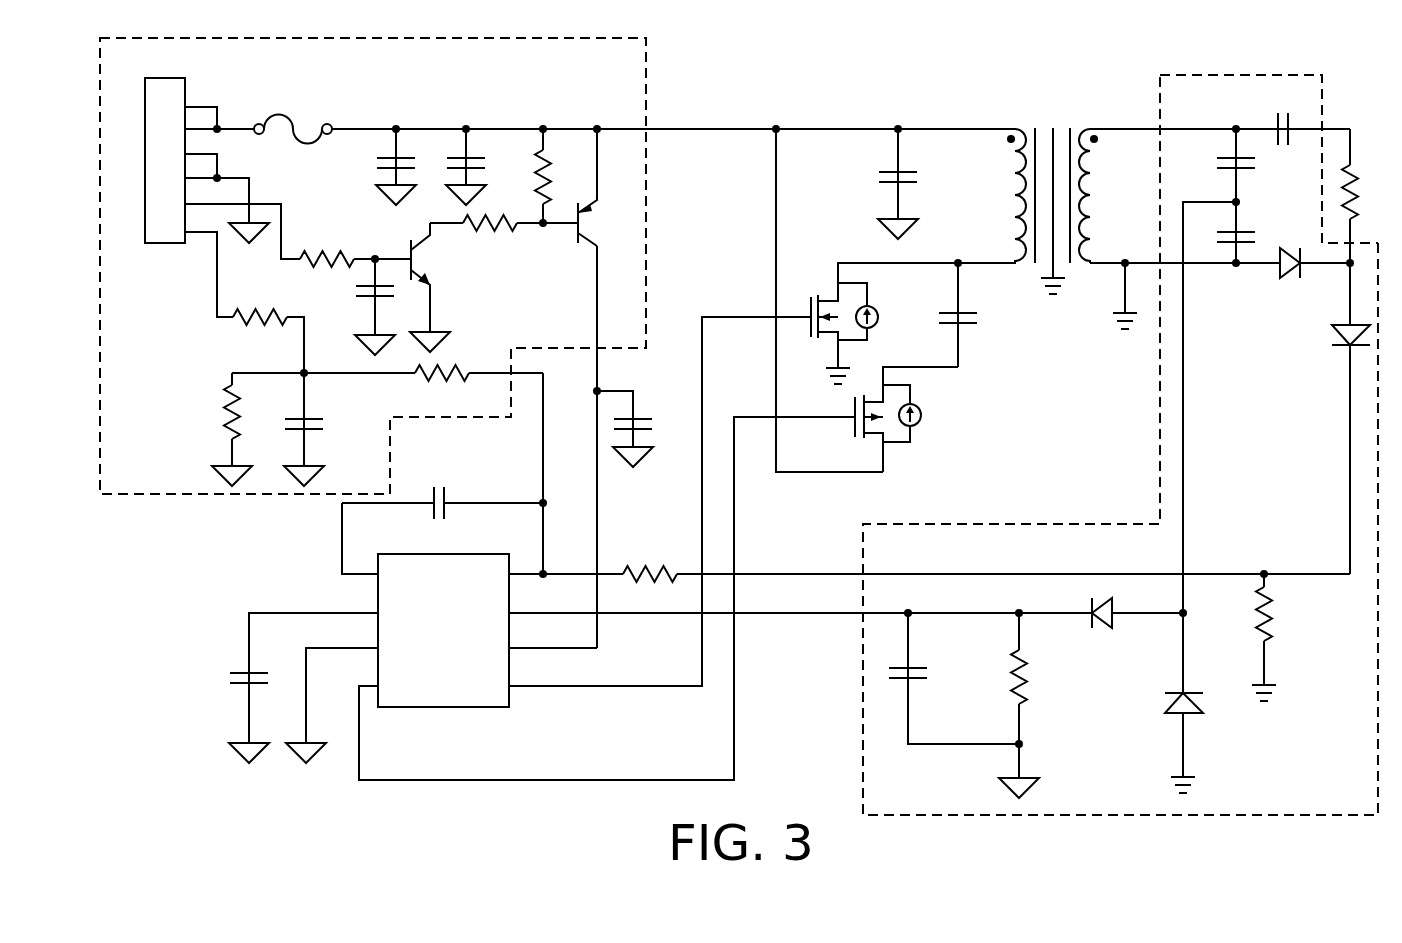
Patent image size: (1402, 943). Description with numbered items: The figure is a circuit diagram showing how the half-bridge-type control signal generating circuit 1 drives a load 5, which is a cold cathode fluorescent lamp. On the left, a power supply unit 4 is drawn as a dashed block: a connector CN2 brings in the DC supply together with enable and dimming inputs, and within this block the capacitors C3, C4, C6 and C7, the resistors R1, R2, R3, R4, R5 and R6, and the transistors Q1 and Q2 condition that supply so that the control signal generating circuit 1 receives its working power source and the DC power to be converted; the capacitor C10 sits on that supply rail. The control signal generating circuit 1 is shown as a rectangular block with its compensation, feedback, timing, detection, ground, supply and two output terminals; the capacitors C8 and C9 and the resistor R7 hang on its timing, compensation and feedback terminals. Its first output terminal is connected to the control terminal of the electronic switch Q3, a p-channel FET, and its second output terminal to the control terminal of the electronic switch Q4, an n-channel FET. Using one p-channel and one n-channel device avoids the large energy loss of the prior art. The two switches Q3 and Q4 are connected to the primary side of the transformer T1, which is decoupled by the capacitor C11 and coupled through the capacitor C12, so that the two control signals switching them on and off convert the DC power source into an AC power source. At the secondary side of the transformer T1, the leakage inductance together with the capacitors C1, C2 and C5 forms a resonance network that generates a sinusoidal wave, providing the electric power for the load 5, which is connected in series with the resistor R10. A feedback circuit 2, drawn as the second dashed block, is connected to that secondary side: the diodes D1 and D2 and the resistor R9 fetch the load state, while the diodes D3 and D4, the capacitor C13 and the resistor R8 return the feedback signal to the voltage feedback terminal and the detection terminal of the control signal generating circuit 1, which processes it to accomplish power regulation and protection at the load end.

The half-bridge-type control signal generating circuit 1 is at (497, 707).
The feedback circuit 2 is at (863, 712).
The power supply unit 4 is at (157, 494).
The load 5 is at (1351, 190).
The connector CN2 is at (216, 182).
The capacitor C1 is at (1284, 111).
The capacitor C2 is at (1255, 165).
The capacitor C3 is at (379, 165).
The capacitor C4 is at (485, 165).
The capacitor C5 is at (1221, 234).
The capacitor C6 is at (360, 307).
The capacitor C7 is at (289, 429).
The capacitor C8 is at (236, 715).
The capacitor C9 is at (439, 487).
The capacitor C10 is at (649, 427).
The capacitor C11 is at (876, 182).
The capacitor C12 is at (984, 313).
The capacitor C13 is at (954, 676).
The resistor R1 is at (339, 247).
The resistor R2 is at (270, 330).
The resistor R3 is at (220, 429).
The resistor R4 is at (559, 176).
The resistor R5 is at (486, 211).
The resistor R6 is at (387, 385).
The resistor R7 is at (650, 561).
The resistor R8 is at (1029, 703).
The resistor R9 is at (1278, 635).
The resistor R10 is at (1372, 198).
The transistor Q1 is at (589, 185).
The transistor Q2 is at (422, 287).
The electronic switch Q3 is at (884, 323).
The electronic switch Q4 is at (906, 419).
The diode D1 is at (1312, 279).
The diode D2 is at (1334, 418).
The diode D3 is at (1120, 605).
The diode D4 is at (1168, 741).
The transformer T1 is at (1154, 192).